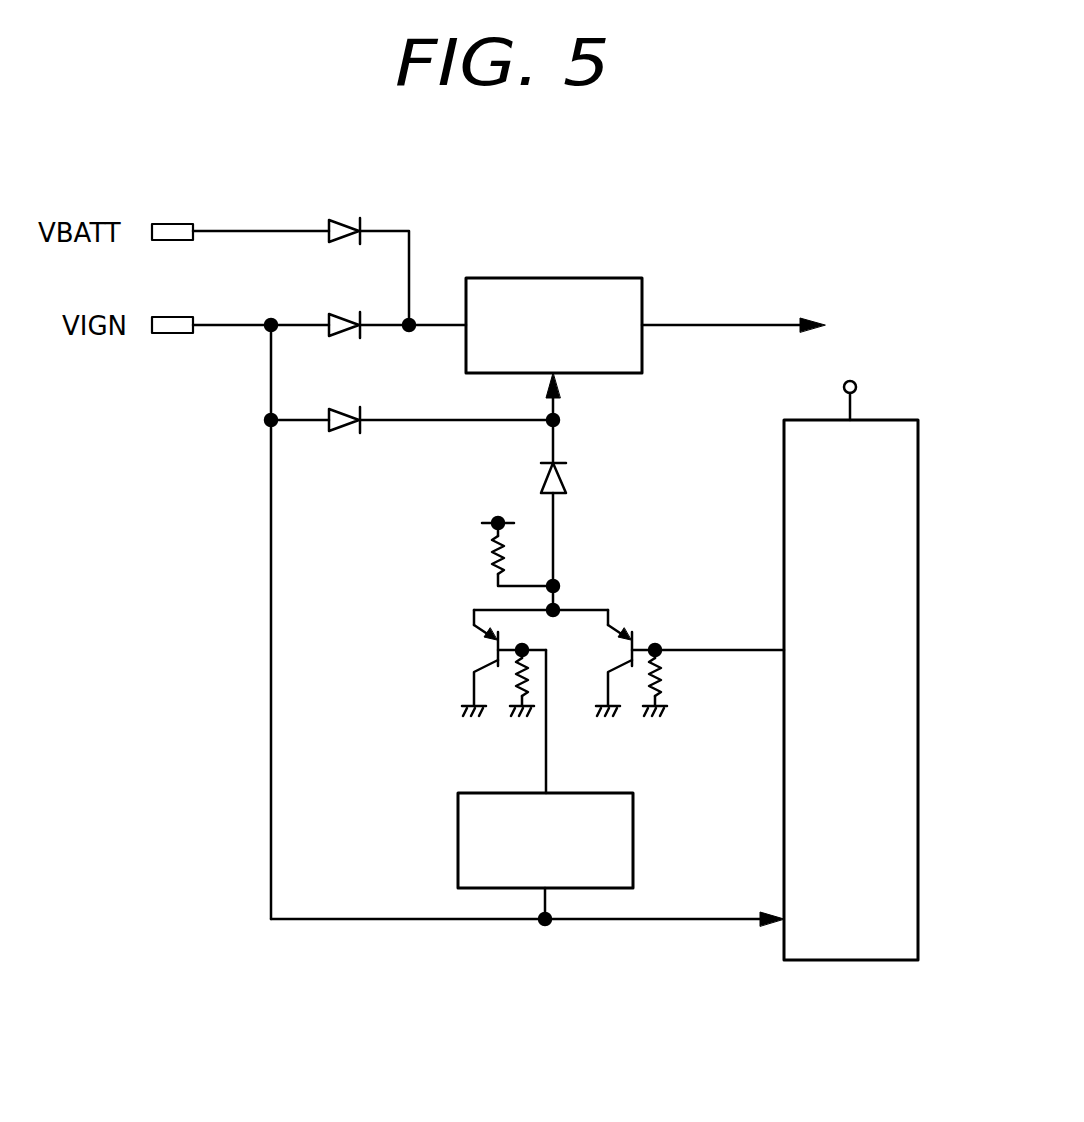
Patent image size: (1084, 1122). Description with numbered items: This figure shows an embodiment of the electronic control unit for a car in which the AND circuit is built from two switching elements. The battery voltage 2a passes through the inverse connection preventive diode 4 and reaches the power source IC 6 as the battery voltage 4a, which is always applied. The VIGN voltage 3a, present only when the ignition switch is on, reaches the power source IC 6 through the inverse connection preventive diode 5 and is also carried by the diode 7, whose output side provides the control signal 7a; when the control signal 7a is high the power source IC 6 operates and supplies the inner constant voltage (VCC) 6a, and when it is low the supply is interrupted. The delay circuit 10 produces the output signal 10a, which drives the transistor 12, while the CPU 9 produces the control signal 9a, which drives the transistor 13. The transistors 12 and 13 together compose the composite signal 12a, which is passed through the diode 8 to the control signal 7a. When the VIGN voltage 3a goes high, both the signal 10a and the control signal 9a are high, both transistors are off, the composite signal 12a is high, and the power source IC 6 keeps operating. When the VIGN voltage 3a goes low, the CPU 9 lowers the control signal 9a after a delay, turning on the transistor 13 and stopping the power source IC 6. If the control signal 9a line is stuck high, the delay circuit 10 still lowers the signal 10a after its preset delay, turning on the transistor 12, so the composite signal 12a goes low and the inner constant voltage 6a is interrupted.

The battery voltage 2a is at (222, 231).
The VIGN voltage 3a is at (212, 325).
The inverse connection preventive diode 4 is at (338, 220).
The battery voltage 4a is at (412, 322).
The inverse connection preventive diode 5 is at (338, 314).
The power source IC 6 is at (563, 279).
The inner constant voltage (VCC) 6a is at (664, 325).
The diode 7 is at (338, 410).
The control signal 7a is at (560, 420).
The diode 8 is at (568, 478).
The CPU 9 is at (897, 420).
The control signal 9a is at (736, 650).
The delay circuit 10 is at (458, 848).
The output signal 10a is at (548, 762).
The transistor 12 is at (470, 652).
The composite signal 12a is at (556, 547).
The transistor 13 is at (620, 626).